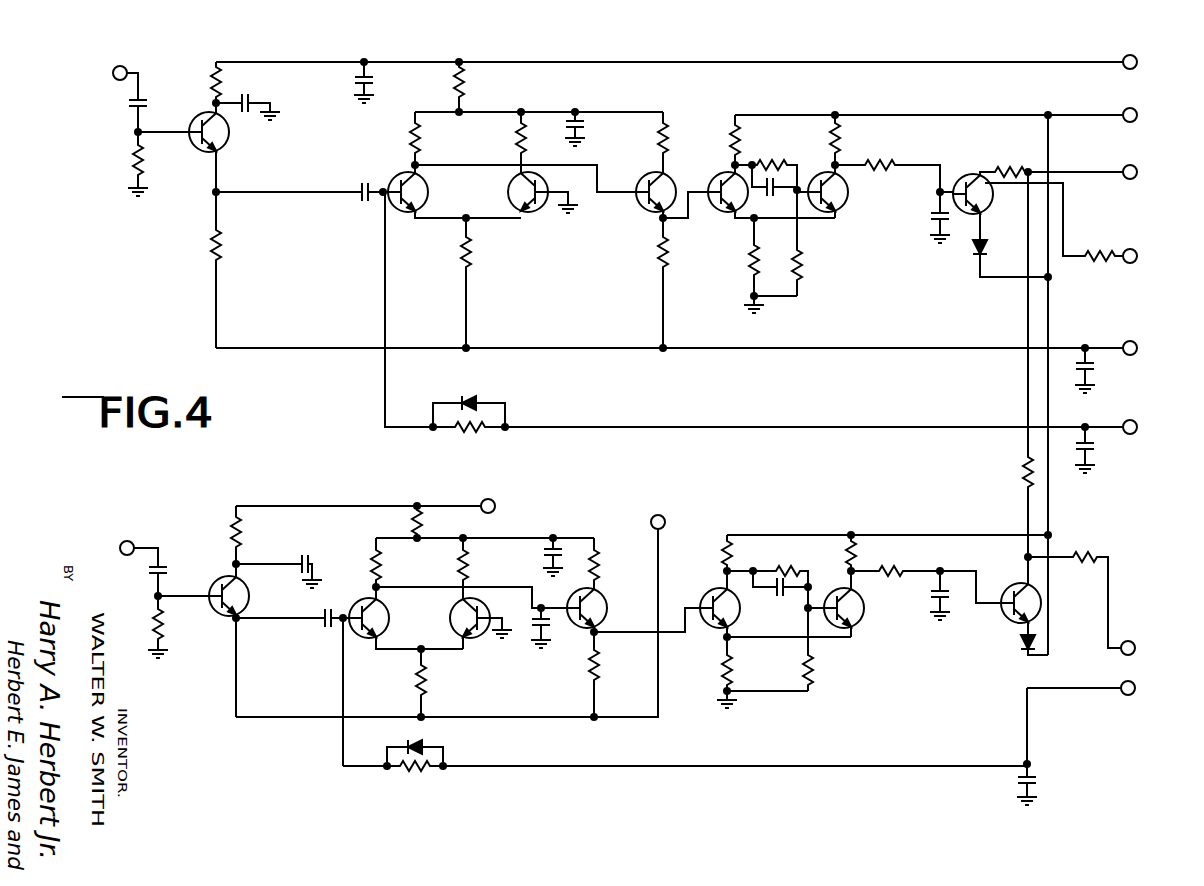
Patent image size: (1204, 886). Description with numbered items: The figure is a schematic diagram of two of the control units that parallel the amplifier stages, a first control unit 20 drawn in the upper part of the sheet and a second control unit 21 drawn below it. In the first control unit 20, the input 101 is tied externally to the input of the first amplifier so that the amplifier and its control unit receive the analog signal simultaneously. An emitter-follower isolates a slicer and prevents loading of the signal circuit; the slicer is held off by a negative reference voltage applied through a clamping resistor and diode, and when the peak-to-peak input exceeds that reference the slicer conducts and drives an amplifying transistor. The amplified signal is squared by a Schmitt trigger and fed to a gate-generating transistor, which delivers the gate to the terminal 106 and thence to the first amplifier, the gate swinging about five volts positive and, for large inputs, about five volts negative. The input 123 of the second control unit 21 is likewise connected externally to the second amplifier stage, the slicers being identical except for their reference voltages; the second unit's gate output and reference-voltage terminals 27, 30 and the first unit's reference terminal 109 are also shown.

The first control unit 20 is at (186, 287).
The second control unit 21 is at (212, 487).
The input 101 is at (127, 70).
The terminal 106 is at (1128, 263).
The reference voltage #1 terminal 109 is at (1133, 420).
The input 123 is at (134, 545).
The gate #2 output terminal 27 is at (1108, 603).
The reference voltage #2 terminal 30 is at (1100, 676).